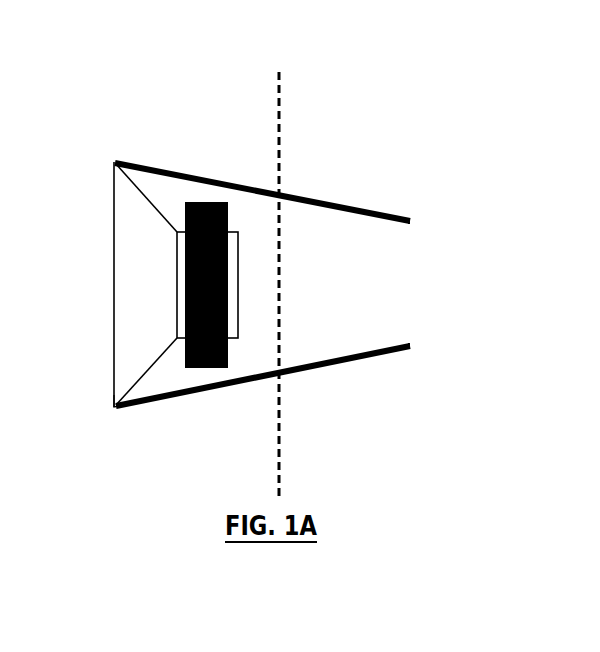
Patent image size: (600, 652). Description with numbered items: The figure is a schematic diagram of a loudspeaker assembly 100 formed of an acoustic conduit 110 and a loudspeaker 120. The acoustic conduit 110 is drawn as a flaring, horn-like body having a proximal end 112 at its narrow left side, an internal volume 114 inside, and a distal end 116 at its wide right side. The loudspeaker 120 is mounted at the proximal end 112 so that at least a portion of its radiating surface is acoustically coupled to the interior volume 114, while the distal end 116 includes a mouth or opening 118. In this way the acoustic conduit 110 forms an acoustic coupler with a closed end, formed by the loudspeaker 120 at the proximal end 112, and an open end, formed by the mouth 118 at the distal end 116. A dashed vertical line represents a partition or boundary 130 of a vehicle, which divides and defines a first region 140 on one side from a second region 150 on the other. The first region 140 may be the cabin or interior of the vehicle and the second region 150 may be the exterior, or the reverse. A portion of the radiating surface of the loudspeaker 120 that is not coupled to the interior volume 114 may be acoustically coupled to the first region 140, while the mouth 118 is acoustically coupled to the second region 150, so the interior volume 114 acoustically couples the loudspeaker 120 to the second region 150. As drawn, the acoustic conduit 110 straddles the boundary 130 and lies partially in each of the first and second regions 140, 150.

The loudspeaker assembly 100 is at (412, 138).
The acoustic conduit 110 is at (350, 368).
The proximal end 112 is at (110, 408).
The internal volume 114 is at (341, 296).
The distal end 116 is at (413, 343).
The mouth 118 is at (413, 277).
The loudspeaker 120 is at (240, 257).
The partition 130 is at (280, 71).
The first region 140 is at (233, 107).
The second region 150 is at (351, 107).